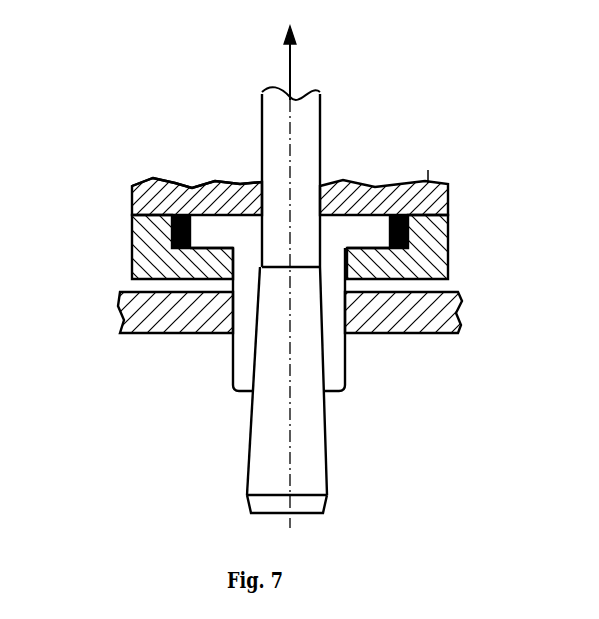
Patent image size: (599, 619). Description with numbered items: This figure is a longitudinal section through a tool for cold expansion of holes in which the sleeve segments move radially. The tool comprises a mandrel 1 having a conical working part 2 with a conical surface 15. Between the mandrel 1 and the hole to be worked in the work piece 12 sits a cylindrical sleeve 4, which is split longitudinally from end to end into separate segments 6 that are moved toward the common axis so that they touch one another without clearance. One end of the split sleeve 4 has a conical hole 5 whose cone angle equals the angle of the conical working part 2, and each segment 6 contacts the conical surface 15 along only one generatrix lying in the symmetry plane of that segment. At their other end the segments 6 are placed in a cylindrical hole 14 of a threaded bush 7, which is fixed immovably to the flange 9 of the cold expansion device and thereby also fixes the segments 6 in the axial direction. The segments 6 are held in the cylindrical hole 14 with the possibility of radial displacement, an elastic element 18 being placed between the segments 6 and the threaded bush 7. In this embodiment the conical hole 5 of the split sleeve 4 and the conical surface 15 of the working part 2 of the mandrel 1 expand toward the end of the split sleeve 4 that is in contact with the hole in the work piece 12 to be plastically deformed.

The mandrel 1 is at (308, 167).
The conical working part 2 is at (313, 447).
The cylindrical sleeve 4 is at (245, 230).
The conical hole 5 is at (252, 333).
The segments 6 is at (330, 350).
The threaded bush 7 is at (140, 267).
The flange 9 is at (142, 197).
The work piece 12 is at (423, 322).
The cylindrical hole 14 is at (353, 245).
The conical surface 15 is at (323, 420).
The elastic element 18 is at (180, 186).